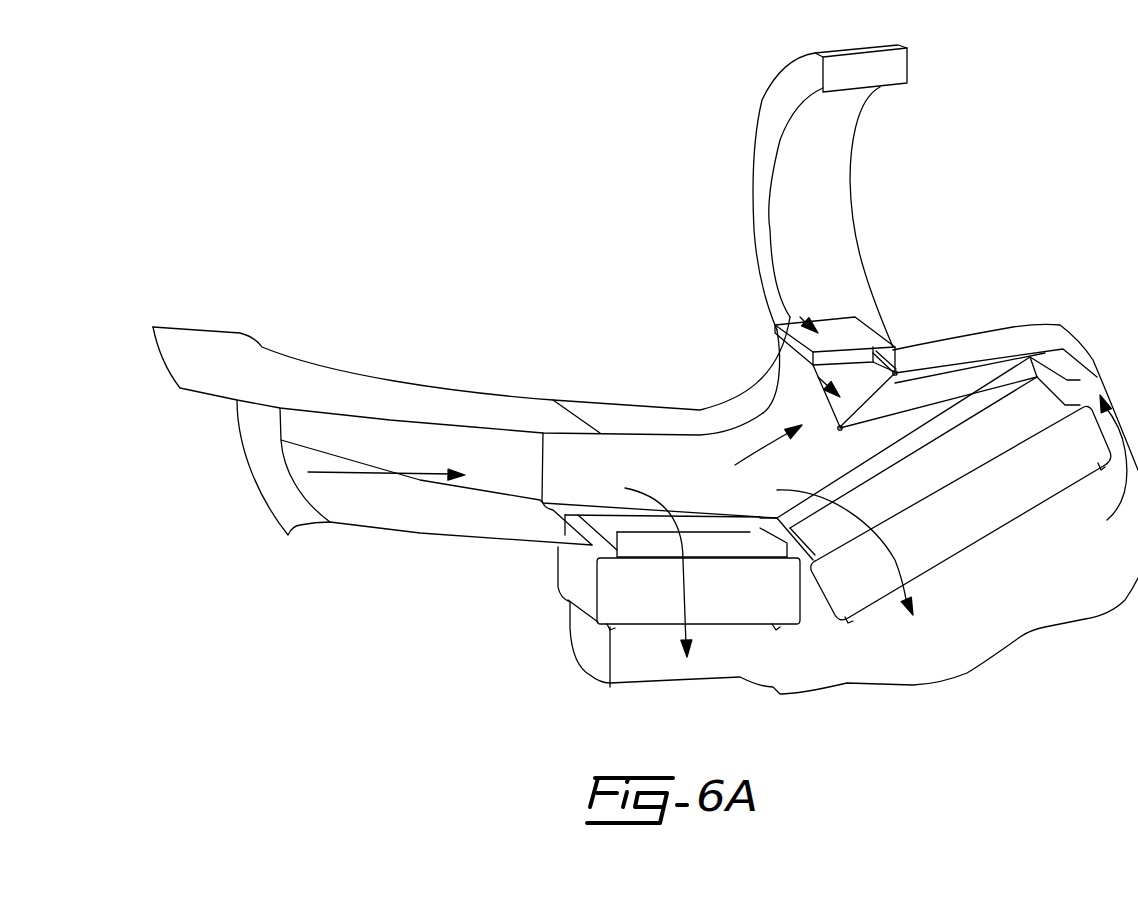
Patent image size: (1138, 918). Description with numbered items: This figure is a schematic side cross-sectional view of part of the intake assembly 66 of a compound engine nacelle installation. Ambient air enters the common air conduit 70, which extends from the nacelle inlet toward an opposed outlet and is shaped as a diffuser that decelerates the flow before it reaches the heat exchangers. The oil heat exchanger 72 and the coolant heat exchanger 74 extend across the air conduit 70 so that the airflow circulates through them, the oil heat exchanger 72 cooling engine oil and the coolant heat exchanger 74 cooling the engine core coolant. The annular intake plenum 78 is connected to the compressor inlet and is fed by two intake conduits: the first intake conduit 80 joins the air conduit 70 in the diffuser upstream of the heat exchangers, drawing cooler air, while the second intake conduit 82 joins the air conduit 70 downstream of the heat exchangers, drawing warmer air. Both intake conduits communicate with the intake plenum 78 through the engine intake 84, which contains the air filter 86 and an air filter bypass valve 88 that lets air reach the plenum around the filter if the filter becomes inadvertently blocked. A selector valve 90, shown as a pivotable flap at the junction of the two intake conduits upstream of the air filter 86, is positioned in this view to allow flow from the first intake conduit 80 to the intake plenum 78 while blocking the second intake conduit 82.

The intake assembly 66 is at (550, 224).
The air conduit 70 is at (397, 443).
The oil heat exchanger 72 is at (756, 615).
The coolant heat exchanger 74 is at (955, 538).
The intake plenum 78 is at (793, 128).
The first intake conduit 80 is at (838, 427).
The second intake conduit 82 is at (1012, 372).
The engine intake 84 is at (900, 353).
The air filter 86 is at (775, 325).
The air filter bypass valve 88 is at (897, 355).
The selector valve 90 is at (818, 377).